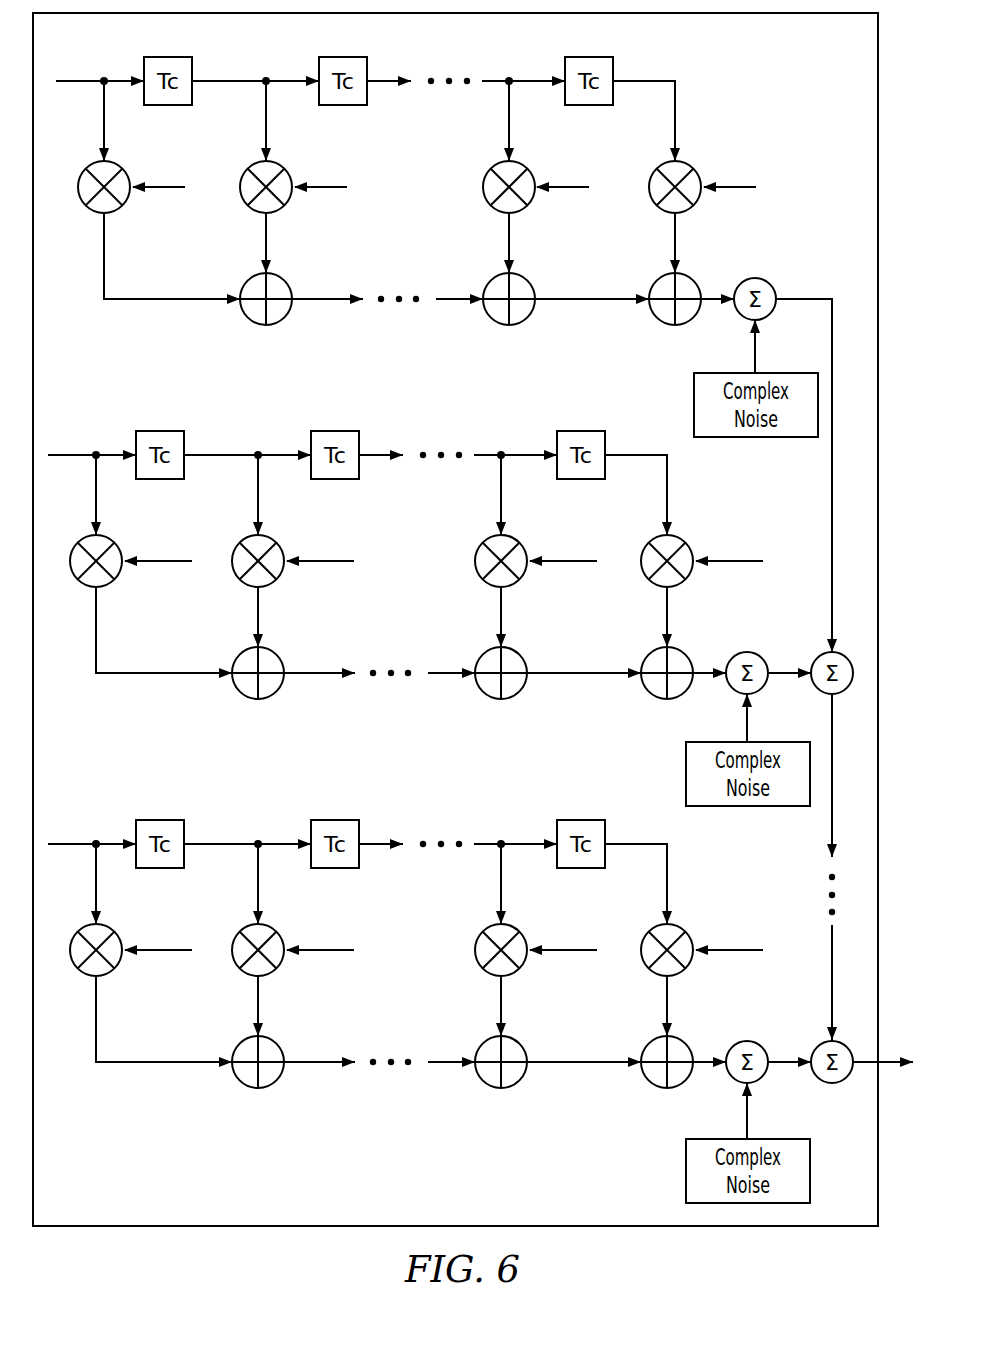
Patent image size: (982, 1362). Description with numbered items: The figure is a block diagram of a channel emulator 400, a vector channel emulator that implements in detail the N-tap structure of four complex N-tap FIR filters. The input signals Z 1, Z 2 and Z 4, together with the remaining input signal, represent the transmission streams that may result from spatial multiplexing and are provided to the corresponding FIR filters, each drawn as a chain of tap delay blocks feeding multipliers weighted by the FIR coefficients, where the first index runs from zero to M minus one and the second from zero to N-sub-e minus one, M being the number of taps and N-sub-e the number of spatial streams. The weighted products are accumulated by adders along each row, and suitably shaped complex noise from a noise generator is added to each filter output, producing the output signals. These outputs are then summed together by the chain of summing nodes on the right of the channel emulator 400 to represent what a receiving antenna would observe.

The channel emulator 400 is at (473, 648).
The first input signal channel Z1(k) 1 is at (76, 62).
The second input signal channel Z2(k) 2 is at (71, 435).
The fourth input signal channel Z4(k) 4 is at (71, 824).